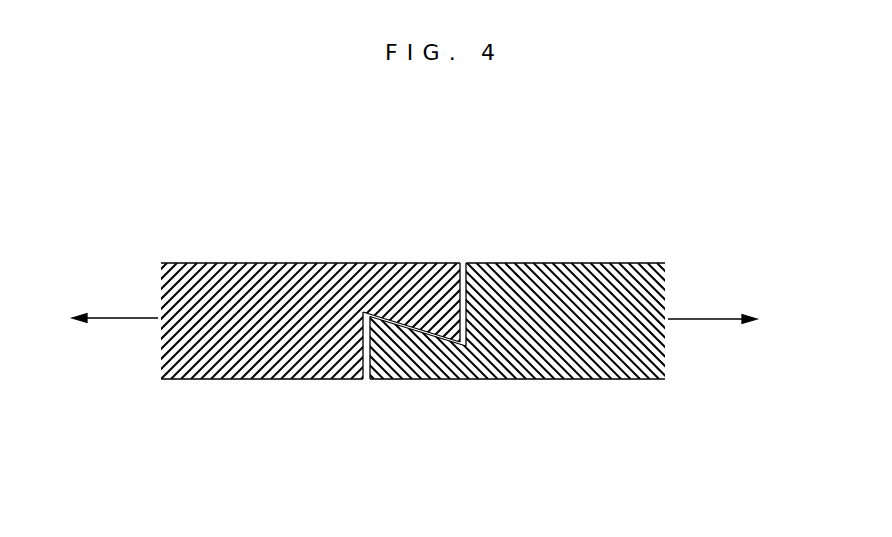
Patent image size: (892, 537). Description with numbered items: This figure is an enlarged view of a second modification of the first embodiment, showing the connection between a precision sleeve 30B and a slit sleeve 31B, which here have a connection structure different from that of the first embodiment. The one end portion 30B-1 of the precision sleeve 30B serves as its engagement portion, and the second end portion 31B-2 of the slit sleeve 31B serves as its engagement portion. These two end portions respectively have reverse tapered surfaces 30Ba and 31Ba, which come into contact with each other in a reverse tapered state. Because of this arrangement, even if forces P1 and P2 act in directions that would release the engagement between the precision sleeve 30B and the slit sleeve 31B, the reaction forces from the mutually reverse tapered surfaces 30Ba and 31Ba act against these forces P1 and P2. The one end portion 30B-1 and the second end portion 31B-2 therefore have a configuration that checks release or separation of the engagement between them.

The slit sleeve 31B is at (309, 268).
The second end portion 31B-2 is at (452, 268).
The reverse tapered surface 31Ba is at (423, 330).
The precision sleeve 30B is at (515, 337).
The one end portion 30B-1 is at (404, 380).
The reverse tapered surface 30Ba is at (404, 327).
The force P1 is at (99, 318).
The force P2 is at (728, 319).